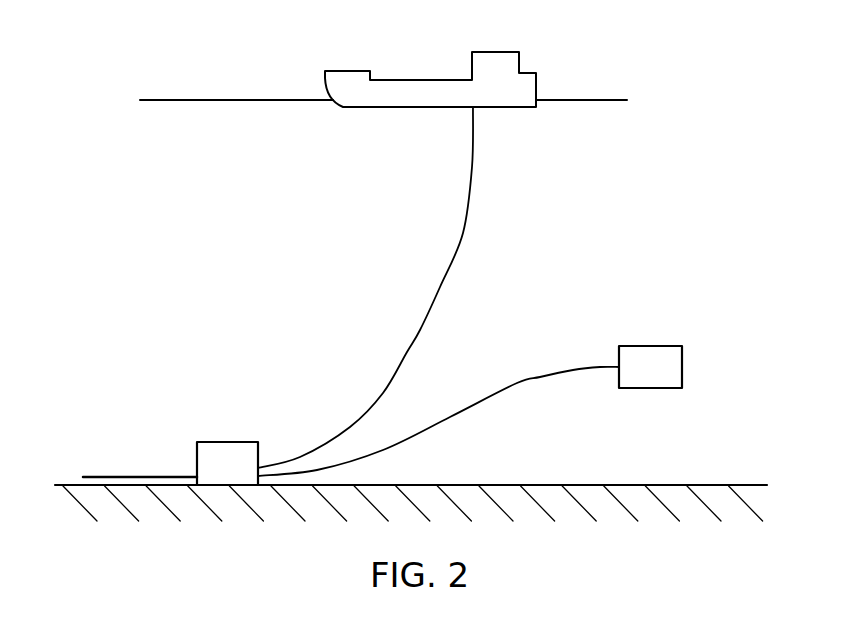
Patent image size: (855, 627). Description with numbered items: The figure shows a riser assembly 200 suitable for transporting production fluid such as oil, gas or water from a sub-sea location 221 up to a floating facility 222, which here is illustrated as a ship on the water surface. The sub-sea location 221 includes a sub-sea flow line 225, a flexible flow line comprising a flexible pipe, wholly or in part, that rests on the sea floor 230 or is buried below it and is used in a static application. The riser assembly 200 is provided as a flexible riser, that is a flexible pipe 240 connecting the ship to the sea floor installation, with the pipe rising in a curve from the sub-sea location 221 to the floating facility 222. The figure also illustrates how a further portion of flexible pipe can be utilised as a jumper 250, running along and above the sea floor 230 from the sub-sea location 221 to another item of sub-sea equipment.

The riser assembly 200 is at (290, 282).
The floating facility 222 is at (348, 71).
The flexible pipe 240 is at (417, 323).
The jumper 250 is at (547, 373).
The sub-sea location 221 is at (223, 442).
The sub-sea flow line 225 is at (142, 477).
The sea floor 230 is at (713, 484).